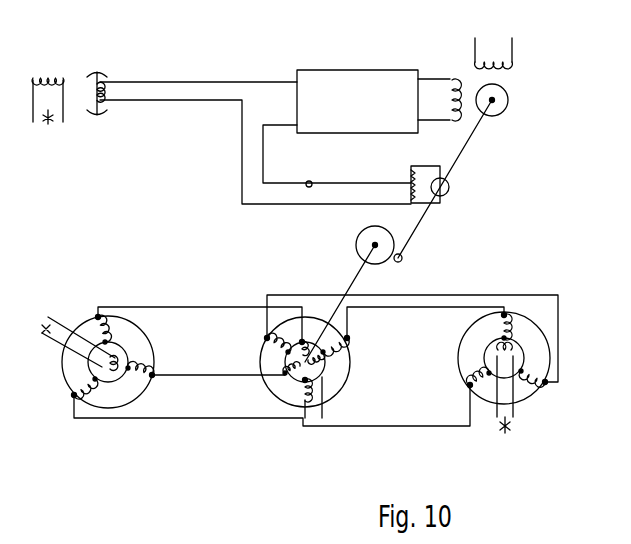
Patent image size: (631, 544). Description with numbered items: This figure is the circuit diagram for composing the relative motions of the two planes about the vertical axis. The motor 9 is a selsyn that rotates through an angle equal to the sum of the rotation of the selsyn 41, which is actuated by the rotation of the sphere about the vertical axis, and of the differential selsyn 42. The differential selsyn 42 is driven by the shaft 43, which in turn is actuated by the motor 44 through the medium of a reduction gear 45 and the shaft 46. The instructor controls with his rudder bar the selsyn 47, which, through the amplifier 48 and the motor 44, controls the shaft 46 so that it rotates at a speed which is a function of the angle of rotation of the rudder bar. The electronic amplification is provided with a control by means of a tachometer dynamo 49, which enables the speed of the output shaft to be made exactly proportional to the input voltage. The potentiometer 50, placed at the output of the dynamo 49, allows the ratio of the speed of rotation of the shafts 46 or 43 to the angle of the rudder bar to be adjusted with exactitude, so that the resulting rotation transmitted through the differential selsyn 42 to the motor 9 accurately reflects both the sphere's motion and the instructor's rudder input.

The motor 9 is at (530, 330).
The selsyn 41 is at (150, 350).
The differential selsyn 42 is at (340, 368).
The shaft 43 is at (352, 273).
The motor 44 is at (510, 92).
The reduction gear 45 is at (356, 243).
The shaft 46 is at (473, 143).
The selsyn 47 is at (104, 116).
The amplifier 48 is at (371, 78).
The tachometer dynamo 49 is at (450, 194).
The potentiometer 50 is at (409, 171).